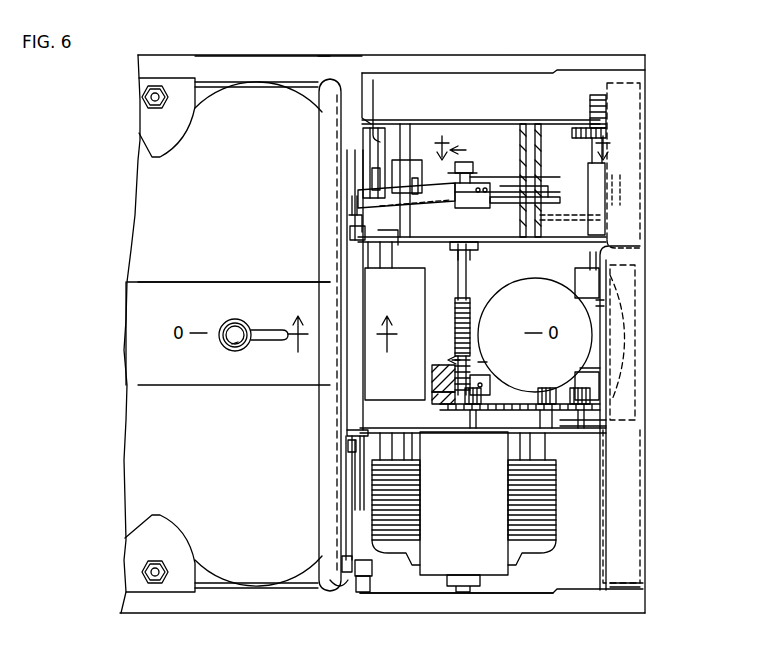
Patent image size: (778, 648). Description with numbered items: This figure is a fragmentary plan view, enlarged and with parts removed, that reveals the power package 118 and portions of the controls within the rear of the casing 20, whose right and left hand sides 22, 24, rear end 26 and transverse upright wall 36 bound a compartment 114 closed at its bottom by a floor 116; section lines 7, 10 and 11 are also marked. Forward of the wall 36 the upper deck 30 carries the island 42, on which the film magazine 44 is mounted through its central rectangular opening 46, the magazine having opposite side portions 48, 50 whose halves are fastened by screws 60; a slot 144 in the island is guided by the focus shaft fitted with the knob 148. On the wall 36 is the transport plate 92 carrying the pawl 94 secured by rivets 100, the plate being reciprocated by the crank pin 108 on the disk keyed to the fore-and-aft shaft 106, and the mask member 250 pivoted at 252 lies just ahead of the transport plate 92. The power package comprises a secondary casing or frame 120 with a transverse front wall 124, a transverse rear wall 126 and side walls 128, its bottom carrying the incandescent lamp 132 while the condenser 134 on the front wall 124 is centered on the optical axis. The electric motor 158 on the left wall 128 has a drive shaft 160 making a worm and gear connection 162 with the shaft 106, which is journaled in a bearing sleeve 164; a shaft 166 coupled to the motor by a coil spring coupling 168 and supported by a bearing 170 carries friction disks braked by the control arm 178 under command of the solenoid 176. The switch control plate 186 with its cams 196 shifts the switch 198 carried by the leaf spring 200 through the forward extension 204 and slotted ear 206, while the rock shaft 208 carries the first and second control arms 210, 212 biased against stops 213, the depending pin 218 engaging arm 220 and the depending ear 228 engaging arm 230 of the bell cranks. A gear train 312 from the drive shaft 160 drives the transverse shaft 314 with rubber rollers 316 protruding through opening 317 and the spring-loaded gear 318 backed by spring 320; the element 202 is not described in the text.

The section line 7- 7 is at (342, 341).
The section line 10- 10 is at (482, 255).
The section line 11- 11 is at (515, 149).
The housing or casing 20 is at (324, 51).
The right hand side 22 is at (240, 614).
The left hand side 24 is at (244, 60).
The rear end 26 is at (645, 586).
The top or upper deck portion 30 is at (160, 62).
The transverse upright wall 36 is at (340, 410).
The island 42 is at (128, 320).
The film magazine 44 is at (126, 222).
The central rectangular opening 46 is at (130, 284).
The side portion 48 is at (252, 119).
The side portion 50 is at (248, 569).
The screws 60 is at (140, 99).
The transport plate 92 is at (350, 512).
The pawl 94 is at (352, 224).
The rivets 100 is at (350, 192).
The fore-and-aft shaft 106 is at (436, 398).
The crank pin 108 is at (352, 451).
The compartment 114 is at (528, 590).
The floor 116 is at (598, 260).
The power package or unit 118 is at (573, 458).
The secondary casing or frame 120 is at (638, 244).
The transverse front wall 124 is at (362, 428).
The transverse rear wall 126 is at (612, 300).
The side walls 128 is at (545, 236).
The incandescent lamp 132 is at (522, 285).
The condenser 134 is at (370, 385).
The slot 144 is at (268, 318).
The knob 148 is at (232, 318).
The electric motor 158 is at (556, 548).
The drive shaft 160 is at (470, 360).
The worm and gear connection 162 is at (486, 384).
The bearing sleeve 164 is at (430, 384).
The shaft 166 is at (467, 284).
The coil spring coupling 168 is at (476, 308).
The bearing 170 is at (480, 244).
The controlling solenoid 176 is at (596, 178).
The control arm 178 is at (490, 200).
The switch control plate 186 is at (346, 236).
The cams 196 is at (360, 470).
The switch 198 is at (412, 200).
The leaf spring 200 is at (512, 202).
The arm 202 is at (532, 200).
The forward extension 204 is at (355, 207).
The slotted ear 206 is at (345, 230).
The rock shaft 208 is at (388, 268).
The first control arm 210 is at (388, 236).
The second control arm 212 is at (382, 130).
The stops 213 is at (372, 176).
The depending pin 218 is at (368, 574).
The arm 220 is at (366, 592).
The depending ear 228 is at (352, 150).
The arm 230 is at (372, 82).
The mask member 250 is at (343, 560).
The pivot 252 is at (345, 585).
The gear train 312 is at (566, 420).
The transverse shaft 314 is at (594, 302).
The rubber rollers 316 is at (578, 292).
The opening 317 is at (585, 370).
The axially spring-loaded gear 318 is at (606, 136).
The spring 320 is at (594, 120).